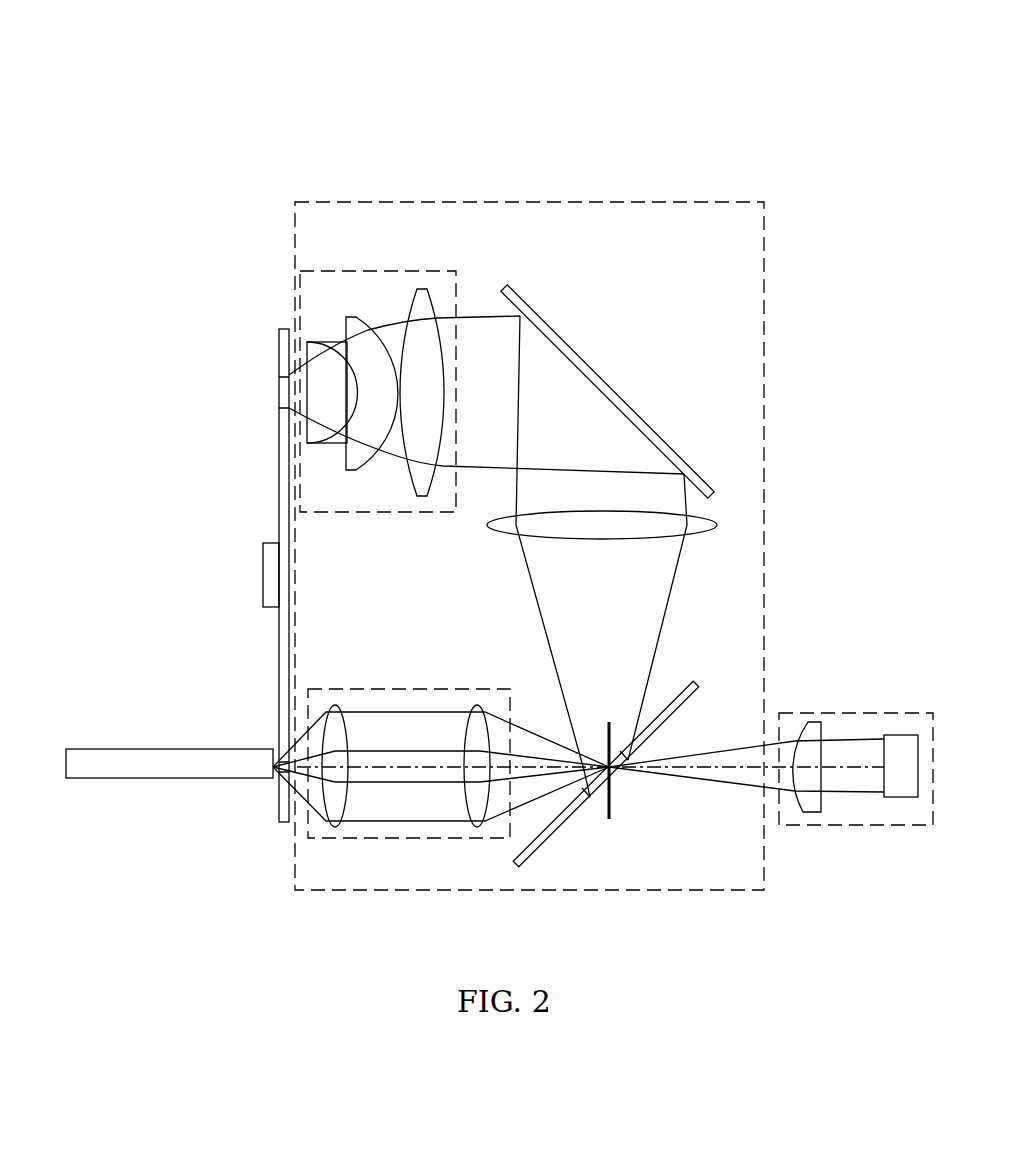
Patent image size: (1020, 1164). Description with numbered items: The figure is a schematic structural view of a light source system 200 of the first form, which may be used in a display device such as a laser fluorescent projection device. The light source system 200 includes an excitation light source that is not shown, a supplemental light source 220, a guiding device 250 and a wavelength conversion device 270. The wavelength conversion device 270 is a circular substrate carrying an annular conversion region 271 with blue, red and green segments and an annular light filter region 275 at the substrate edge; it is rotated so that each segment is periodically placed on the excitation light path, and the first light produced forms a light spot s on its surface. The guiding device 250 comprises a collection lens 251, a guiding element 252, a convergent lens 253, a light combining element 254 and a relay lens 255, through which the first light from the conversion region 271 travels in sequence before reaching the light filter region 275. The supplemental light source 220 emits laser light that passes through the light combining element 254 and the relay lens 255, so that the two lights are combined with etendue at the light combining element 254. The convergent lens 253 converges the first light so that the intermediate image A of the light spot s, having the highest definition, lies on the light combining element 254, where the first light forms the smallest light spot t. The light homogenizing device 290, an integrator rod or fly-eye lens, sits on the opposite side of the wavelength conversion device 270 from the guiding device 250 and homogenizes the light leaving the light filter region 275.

The light source system 200 is at (482, 68).
The guiding device 250 is at (528, 201).
The collection lens 251 is at (365, 271).
The guiding element 252 is at (522, 302).
The convergent lens 253 is at (690, 538).
The light combining element 254 is at (542, 838).
The relay lens 255 is at (405, 688).
The supplemental light source 220 is at (845, 826).
The wavelength conversion device 270 is at (262, 490).
The conversion region 271 is at (277, 394).
The light filter region 275 is at (271, 781).
The light homogenizing device 290 is at (163, 765).
The light spot s is at (282, 400).
The intermediate image A is at (612, 806).
The light spot t is at (588, 802).